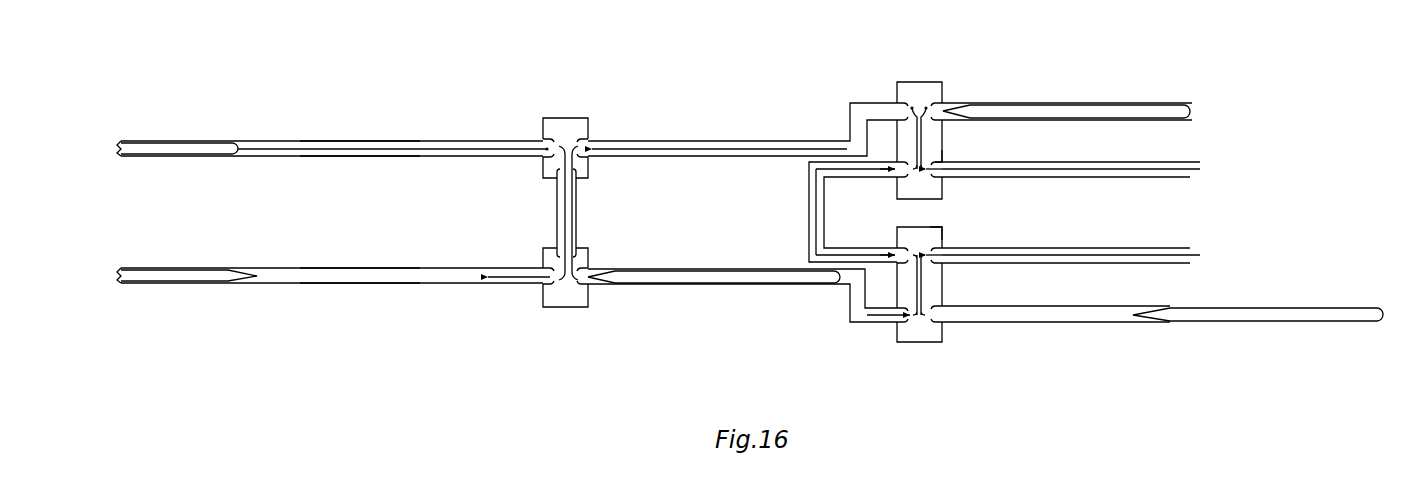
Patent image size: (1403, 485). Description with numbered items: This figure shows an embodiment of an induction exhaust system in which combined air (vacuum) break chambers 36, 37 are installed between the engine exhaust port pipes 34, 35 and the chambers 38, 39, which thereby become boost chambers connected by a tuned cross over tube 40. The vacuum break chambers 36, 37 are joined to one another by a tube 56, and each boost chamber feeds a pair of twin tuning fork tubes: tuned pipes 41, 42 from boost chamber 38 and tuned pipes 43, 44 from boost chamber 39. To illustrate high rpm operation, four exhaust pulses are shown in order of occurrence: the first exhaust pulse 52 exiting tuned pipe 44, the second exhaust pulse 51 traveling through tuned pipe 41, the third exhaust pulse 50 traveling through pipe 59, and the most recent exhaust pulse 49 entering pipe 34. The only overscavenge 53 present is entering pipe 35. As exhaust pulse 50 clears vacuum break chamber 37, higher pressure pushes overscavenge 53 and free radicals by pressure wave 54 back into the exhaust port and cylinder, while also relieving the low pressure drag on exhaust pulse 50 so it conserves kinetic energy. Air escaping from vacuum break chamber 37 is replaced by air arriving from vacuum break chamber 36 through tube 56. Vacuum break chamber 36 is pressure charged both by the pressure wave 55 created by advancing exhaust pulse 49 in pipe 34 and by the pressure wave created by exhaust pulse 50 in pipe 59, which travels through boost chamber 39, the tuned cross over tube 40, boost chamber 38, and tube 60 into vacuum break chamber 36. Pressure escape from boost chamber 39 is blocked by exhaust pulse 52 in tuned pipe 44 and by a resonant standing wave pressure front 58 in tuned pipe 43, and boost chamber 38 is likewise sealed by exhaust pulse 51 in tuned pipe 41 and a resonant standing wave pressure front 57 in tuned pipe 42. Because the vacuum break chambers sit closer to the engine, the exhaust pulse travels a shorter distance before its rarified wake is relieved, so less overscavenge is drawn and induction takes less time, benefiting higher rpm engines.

The engine exhaust port pipe 34 is at (262, 139).
The engine exhaust port pipe 35 is at (290, 266).
The vacuum break chamber 36 is at (592, 114).
The vacuum break chamber 37 is at (592, 246).
The boost chamber 38 is at (945, 80).
The boost chamber 39 is at (943, 347).
The tuned cross over tube 40 is at (807, 213).
The tuned pipe 41 is at (1175, 101).
The tuned pipe 42 is at (1173, 160).
The tuned pipe 43 is at (1173, 246).
The tuned pipe 44 is at (1172, 305).
The exhaust pulse 49 is at (178, 162).
The exhaust pulse 50 is at (718, 287).
The exhaust pulse 51 is at (1063, 121).
The exhaust pulse 52 is at (1213, 323).
The overscavenge 53 is at (167, 286).
The pressure wave 54 is at (353, 285).
The pressure wave 55 is at (352, 157).
The tube 56 is at (552, 212).
The resonant standing wave pressure front 57 is at (942, 158).
The resonant standing wave pressure front 58 is at (943, 244).
The pipe 59 is at (712, 266).
The tube 60 is at (700, 139).